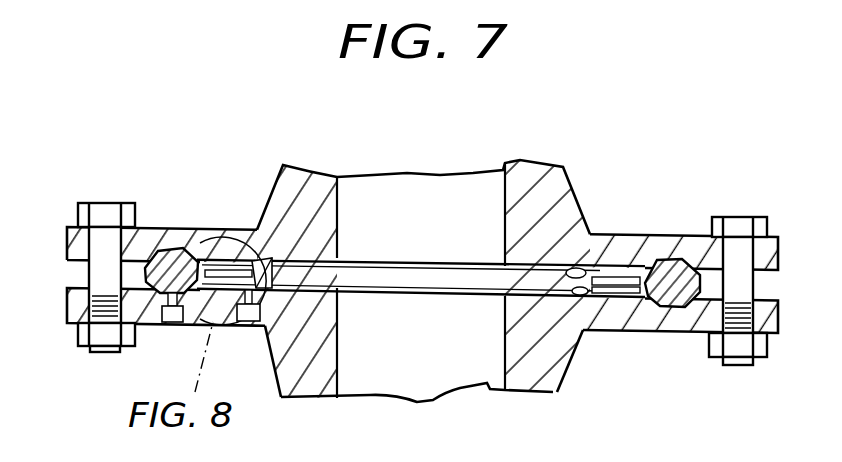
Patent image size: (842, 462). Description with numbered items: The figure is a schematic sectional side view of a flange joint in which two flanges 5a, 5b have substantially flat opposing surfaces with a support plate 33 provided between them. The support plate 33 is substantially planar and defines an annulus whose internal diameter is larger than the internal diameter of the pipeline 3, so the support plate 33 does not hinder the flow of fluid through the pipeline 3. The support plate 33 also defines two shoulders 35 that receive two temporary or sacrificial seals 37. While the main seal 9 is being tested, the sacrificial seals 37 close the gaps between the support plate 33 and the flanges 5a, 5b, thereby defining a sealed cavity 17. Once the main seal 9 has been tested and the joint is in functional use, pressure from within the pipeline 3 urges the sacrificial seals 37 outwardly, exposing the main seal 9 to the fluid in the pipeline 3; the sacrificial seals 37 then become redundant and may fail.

The pipeline 3 is at (533, 175).
The flange 5a is at (157, 227).
The flange 5b is at (149, 326).
The main seal 9 is at (678, 258).
The sealed cavity 17 is at (640, 270).
The support plate 33 is at (518, 392).
The shoulder 35 is at (568, 270).
The sacrificial seal 37 is at (614, 333).